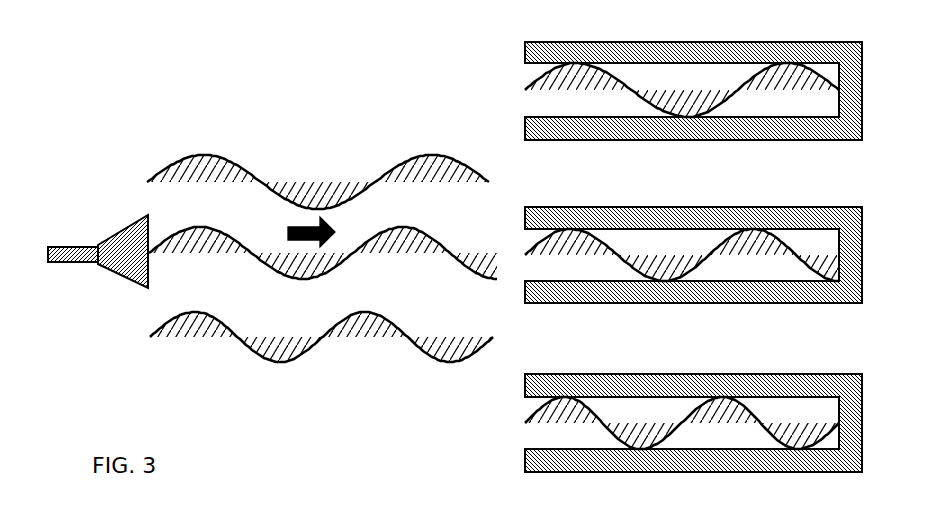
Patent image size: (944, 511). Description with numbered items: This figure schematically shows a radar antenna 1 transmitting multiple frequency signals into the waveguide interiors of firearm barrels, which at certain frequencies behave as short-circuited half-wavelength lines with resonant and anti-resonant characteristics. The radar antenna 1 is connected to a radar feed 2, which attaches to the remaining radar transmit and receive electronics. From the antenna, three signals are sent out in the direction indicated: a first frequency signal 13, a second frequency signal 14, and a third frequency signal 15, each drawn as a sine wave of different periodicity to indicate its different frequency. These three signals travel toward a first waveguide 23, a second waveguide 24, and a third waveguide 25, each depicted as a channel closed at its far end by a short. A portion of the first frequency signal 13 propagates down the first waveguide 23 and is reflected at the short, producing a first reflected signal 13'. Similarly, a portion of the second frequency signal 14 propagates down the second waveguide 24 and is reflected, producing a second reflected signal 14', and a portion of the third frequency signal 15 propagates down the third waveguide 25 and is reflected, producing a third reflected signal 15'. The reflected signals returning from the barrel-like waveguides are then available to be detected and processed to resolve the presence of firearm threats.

The radar antenna 1 is at (129, 233).
The radar feed 2 is at (79, 248).
The first frequency signal 13 is at (318, 167).
The second frequency signal 14 is at (323, 246).
The third frequency signal 15 is at (321, 332).
The first reflected signal 13' is at (664, 90).
The second reflected signal 14' is at (663, 255).
The third reflected signal 15' is at (663, 423).
The first waveguide 23 is at (538, 47).
The second waveguide 24 is at (538, 212).
The third waveguide 25 is at (538, 378).